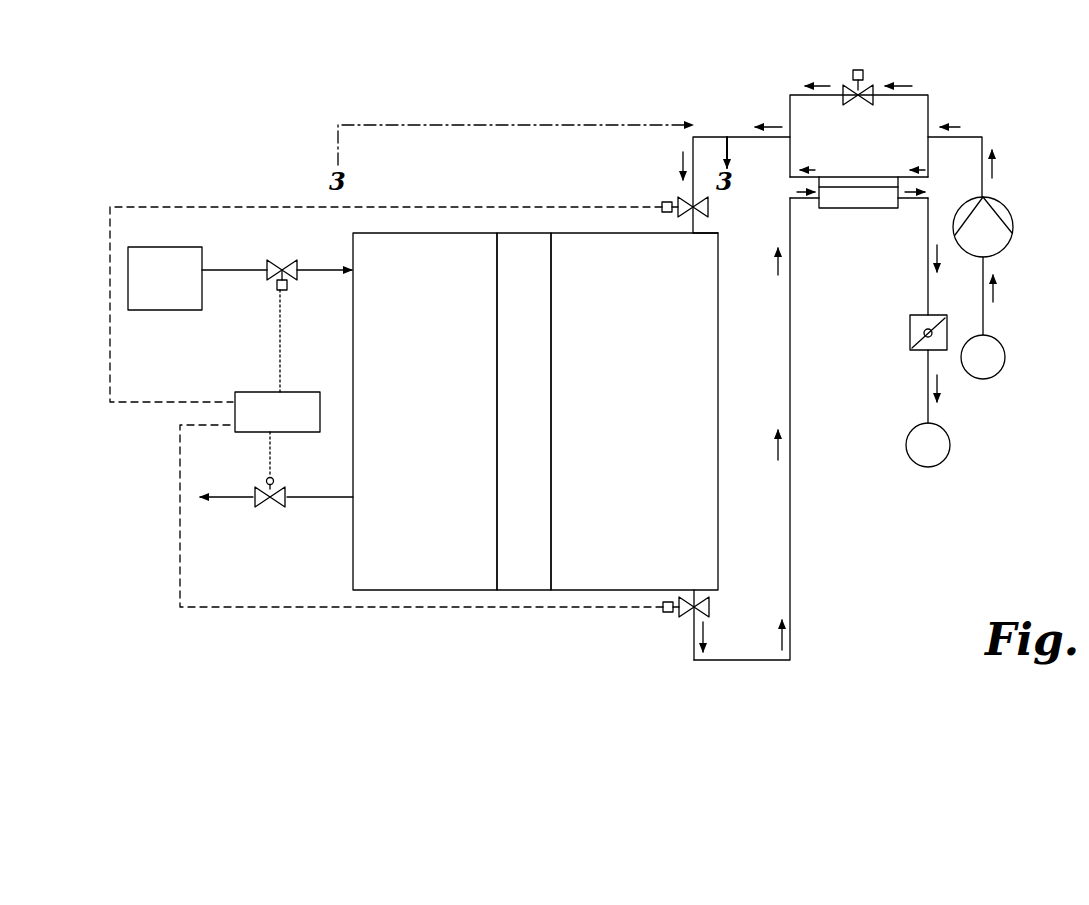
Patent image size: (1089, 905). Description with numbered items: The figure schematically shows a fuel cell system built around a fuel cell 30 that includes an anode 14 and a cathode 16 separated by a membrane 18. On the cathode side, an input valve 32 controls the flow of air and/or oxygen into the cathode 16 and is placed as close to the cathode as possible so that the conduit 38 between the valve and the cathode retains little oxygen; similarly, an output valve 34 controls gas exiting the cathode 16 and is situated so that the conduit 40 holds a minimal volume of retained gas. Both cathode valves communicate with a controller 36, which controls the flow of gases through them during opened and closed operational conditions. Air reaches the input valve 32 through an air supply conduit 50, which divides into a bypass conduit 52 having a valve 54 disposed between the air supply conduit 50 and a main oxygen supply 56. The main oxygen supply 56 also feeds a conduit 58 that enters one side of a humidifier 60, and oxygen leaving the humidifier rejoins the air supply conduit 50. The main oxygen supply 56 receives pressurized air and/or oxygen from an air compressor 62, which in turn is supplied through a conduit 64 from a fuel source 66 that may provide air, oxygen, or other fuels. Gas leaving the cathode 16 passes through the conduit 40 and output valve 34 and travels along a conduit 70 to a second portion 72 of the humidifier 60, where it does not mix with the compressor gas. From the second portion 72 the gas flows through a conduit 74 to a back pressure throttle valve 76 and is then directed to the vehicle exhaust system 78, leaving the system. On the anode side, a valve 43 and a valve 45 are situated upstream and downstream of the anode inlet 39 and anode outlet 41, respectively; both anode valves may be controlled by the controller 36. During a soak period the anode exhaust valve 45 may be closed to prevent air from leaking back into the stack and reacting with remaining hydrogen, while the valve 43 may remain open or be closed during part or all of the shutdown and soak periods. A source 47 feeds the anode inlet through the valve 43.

The anode 14 is at (425, 411).
The cathode 16 is at (634, 411).
The membrane 18 is at (524, 411).
The fuel cell 30 is at (345, 535).
The input valve 32 is at (690, 206).
The output valve 34 is at (690, 612).
The controller 36 is at (252, 392).
The conduit 38 is at (696, 222).
The anode inlet 39 is at (343, 262).
The conduit 40 is at (712, 590).
The anode outlet 41 is at (348, 490).
The anode inlet valve 43 is at (275, 262).
The anode exhaust valve 45 is at (242, 494).
The supply source 47 is at (158, 315).
The air supply conduit 50 is at (742, 133).
The bypass conduit 52 is at (800, 95).
The bypass valve 54 is at (858, 70).
The main oxygen supply 56 is at (978, 137).
The conduit 58 is at (928, 153).
The humidifier 60 is at (856, 177).
The air compressor 62 is at (1013, 225).
The conduit 64 is at (985, 325).
The fuel source 66 is at (1005, 360).
The conduit 70 is at (792, 605).
The second humidifier portion 72 is at (856, 208).
The conduit 74 is at (927, 285).
The back pressure throttle valve 76 is at (910, 333).
The vehicle exhaust system 78 is at (948, 447).